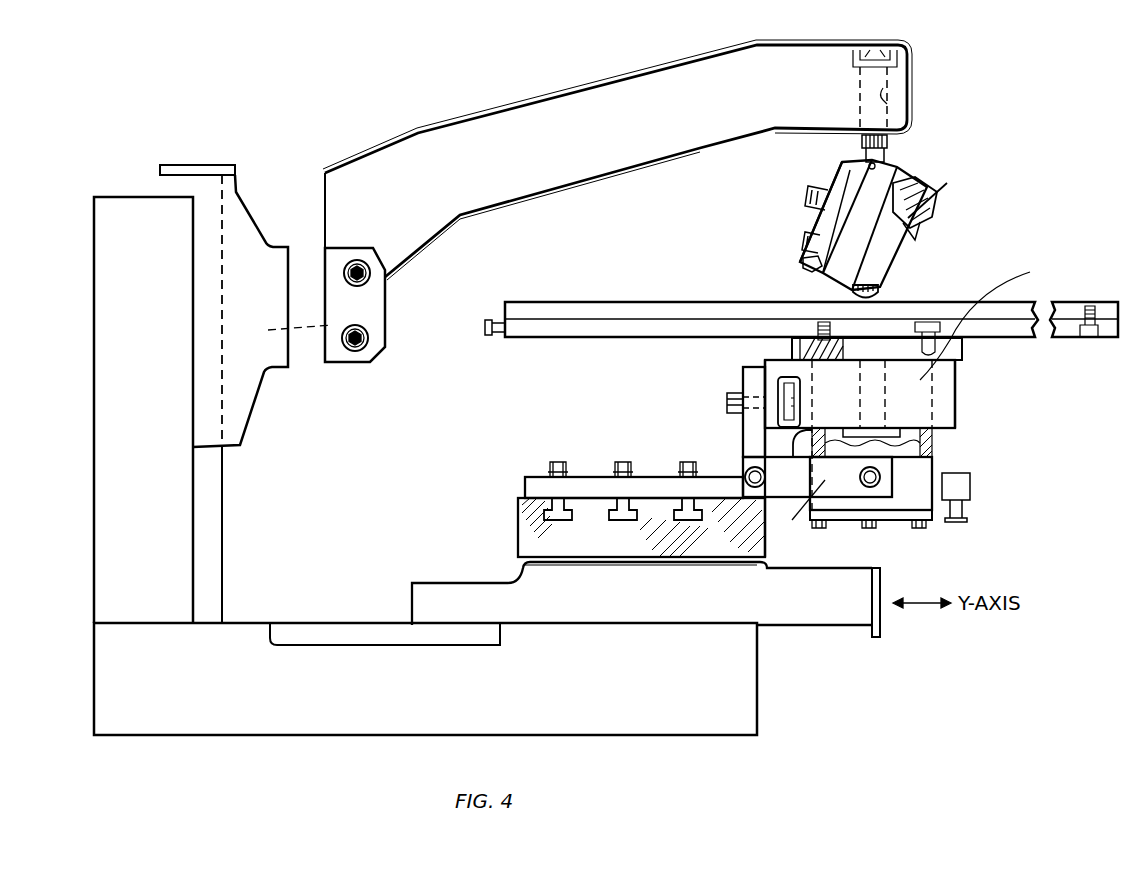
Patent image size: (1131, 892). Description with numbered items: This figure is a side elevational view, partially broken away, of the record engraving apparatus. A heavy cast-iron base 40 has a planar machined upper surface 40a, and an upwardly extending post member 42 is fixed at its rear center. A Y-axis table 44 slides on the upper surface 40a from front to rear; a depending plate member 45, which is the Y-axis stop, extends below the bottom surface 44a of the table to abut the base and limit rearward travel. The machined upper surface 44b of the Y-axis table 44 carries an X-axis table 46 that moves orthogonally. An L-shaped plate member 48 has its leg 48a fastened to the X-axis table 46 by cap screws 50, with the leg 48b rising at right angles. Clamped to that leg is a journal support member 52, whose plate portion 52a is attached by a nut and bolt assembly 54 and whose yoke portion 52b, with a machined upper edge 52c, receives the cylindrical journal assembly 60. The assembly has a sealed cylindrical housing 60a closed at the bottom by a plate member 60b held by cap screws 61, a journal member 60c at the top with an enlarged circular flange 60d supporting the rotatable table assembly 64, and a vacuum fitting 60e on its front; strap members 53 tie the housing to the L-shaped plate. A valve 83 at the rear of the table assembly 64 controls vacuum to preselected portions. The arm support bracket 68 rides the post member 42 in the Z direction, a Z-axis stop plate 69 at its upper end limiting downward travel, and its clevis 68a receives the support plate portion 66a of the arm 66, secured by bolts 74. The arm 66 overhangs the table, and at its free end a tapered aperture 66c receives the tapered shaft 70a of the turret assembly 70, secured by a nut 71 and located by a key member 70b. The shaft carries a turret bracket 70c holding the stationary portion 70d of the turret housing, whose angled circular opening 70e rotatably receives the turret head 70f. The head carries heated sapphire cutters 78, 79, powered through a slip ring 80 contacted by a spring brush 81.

The base 40 is at (388, 706).
The upper surface 40a is at (294, 622).
The post member 42 is at (130, 512).
The Y-axis table 44 is at (635, 606).
The bottom surface 44a is at (795, 628).
The upper surface 44b is at (545, 556).
The plate member 45 is at (876, 640).
The X-axis table 46 is at (585, 550).
The L-shaped plate member 48 is at (735, 434).
The leg 48a is at (530, 477).
The leg 48b is at (741, 378).
The cap screws 50 is at (688, 462).
The journal support member 52 is at (938, 412).
The plate portion 52a is at (784, 385).
The yoke portion 52b is at (957, 386).
The upper edge 52c is at (997, 321).
The strap members 53 is at (801, 511).
The nut and bolt assembly 54 is at (725, 402).
The journal assembly 60 is at (915, 462).
The cylindrical housing 60a is at (900, 470).
The plate member 60b is at (898, 522).
The journal member 60c is at (905, 380).
The circular flange 60d is at (790, 347).
The vacuum fitting 60e is at (972, 488).
The cap screws 61 is at (870, 530).
The table assembly 64 is at (654, 300).
The arm 66 is at (607, 143).
The support plate portion 66a is at (281, 332).
The tapered aperture 66c is at (890, 95).
The arm support bracket 68 is at (245, 296).
The clevis 68a is at (388, 300).
The Z-axis stop plate 69 is at (186, 165).
The turret assembly 70 is at (913, 158).
The tapered shaft 70a is at (890, 140).
The key member 70b is at (855, 95).
The turret bracket 70c is at (820, 220).
The stationary portion 70d is at (860, 208).
The circular opening 70e is at (918, 240).
The rotatable turret head 70f is at (890, 260).
The nut 71 is at (905, 52).
The bolts 74 is at (362, 262).
The cutter 78 is at (882, 290).
The cutter 79 is at (937, 202).
The slip ring 80 is at (912, 180).
The spring brush 81 is at (812, 268).
The valve 83 is at (484, 328).